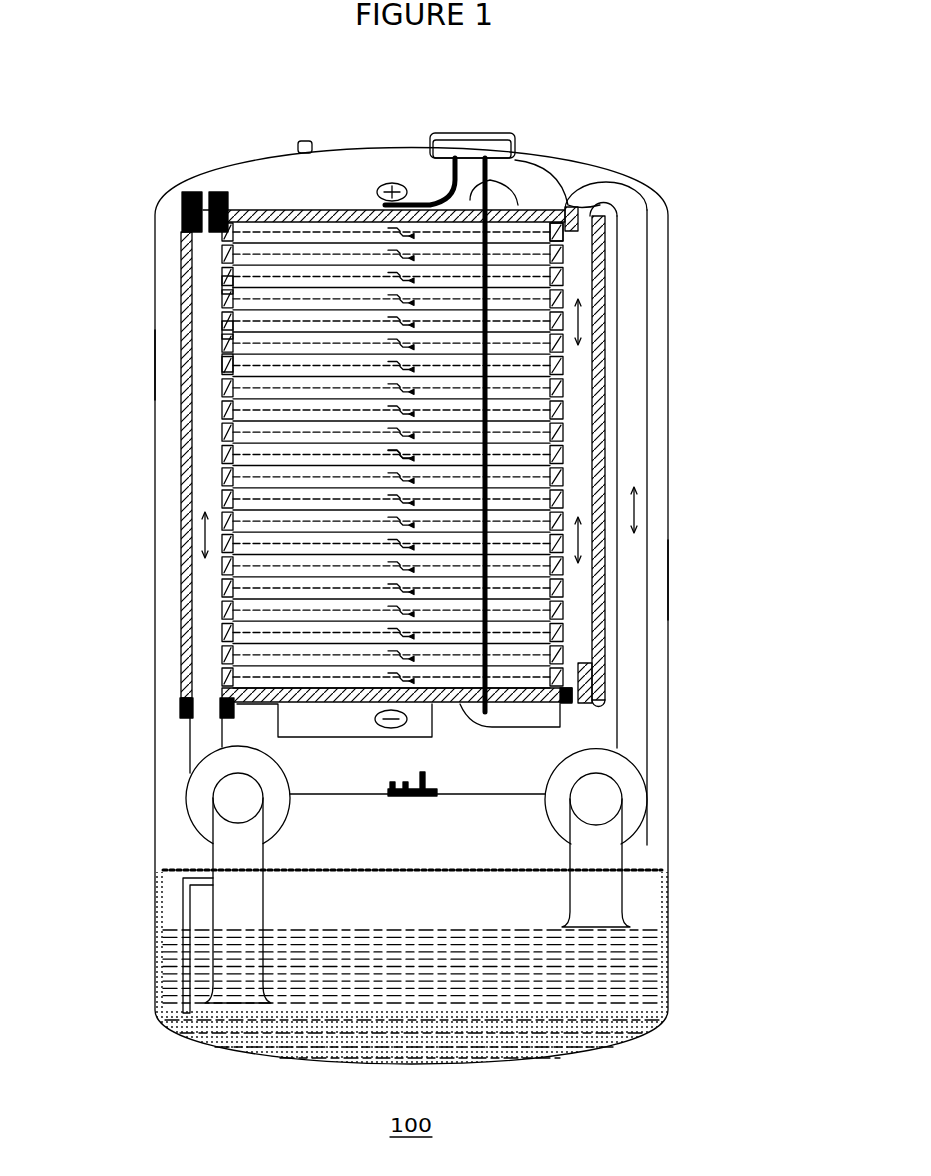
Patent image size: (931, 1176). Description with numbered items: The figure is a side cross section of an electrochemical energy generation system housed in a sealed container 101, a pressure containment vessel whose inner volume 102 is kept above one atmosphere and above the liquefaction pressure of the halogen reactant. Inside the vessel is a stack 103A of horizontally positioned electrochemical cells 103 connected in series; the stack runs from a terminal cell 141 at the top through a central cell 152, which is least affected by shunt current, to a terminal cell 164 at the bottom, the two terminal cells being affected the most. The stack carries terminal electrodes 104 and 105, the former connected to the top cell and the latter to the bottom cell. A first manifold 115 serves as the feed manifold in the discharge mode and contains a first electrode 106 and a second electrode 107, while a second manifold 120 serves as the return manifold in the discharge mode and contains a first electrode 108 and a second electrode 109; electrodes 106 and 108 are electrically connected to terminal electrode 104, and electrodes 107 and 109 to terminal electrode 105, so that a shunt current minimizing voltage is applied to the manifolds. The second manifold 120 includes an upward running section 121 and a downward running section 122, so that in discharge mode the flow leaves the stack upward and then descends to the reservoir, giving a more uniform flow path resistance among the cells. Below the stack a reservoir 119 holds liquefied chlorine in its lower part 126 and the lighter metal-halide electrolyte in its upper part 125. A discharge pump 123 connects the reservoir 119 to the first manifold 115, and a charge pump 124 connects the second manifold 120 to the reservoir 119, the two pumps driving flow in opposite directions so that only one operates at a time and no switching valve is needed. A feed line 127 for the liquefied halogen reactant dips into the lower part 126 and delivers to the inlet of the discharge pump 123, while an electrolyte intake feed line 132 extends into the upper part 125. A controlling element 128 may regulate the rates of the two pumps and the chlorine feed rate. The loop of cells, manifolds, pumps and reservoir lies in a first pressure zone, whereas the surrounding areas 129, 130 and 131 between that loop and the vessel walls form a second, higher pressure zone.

The sealed container 101 is at (647, 183).
The inner volume 102 is at (283, 170).
The electrochemical cells 103 is at (252, 256).
The stack 103A is at (256, 362).
The terminal electrode 104 is at (332, 215).
The terminal electrode 105 is at (563, 720).
The first electrode 106 is at (182, 198).
The second electrode 107 is at (180, 712).
The first electrode 108 is at (580, 220).
The second electrode 109 is at (577, 683).
The first manifold 115 is at (207, 460).
The reservoir 119 is at (165, 890).
The second manifold 120 is at (745, 338).
The upward running section 121 is at (575, 373).
The downward running section 122 is at (629, 399).
The discharge pump 123 is at (238, 798).
The charge pump 124 is at (596, 799).
The upper part of reservoir 125 is at (375, 967).
The lower part of reservoir 126 is at (373, 1017).
The feed line for liquefied halogen reactant 127 is at (187, 932).
The controlling element 128 is at (413, 797).
The higher pressure zone area 129 is at (165, 365).
The higher pressure zone area 130 is at (218, 183).
The higher pressure zone area 131 is at (655, 583).
The electrolyte intake feed line 132 is at (237, 838).
The terminal cell 141 is at (543, 233).
The central cell 152 is at (307, 457).
The terminal cell 164 is at (258, 680).